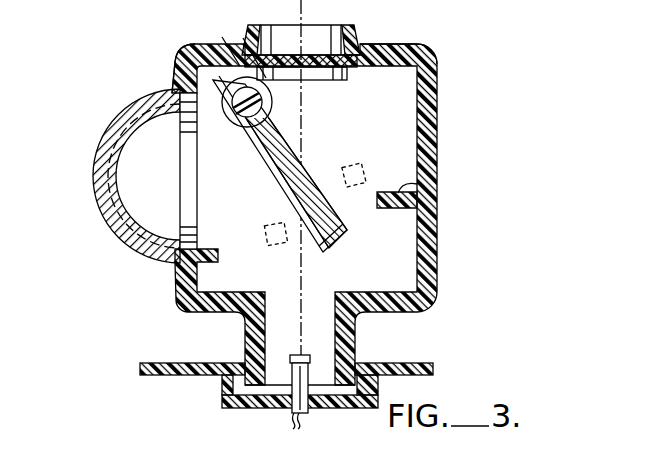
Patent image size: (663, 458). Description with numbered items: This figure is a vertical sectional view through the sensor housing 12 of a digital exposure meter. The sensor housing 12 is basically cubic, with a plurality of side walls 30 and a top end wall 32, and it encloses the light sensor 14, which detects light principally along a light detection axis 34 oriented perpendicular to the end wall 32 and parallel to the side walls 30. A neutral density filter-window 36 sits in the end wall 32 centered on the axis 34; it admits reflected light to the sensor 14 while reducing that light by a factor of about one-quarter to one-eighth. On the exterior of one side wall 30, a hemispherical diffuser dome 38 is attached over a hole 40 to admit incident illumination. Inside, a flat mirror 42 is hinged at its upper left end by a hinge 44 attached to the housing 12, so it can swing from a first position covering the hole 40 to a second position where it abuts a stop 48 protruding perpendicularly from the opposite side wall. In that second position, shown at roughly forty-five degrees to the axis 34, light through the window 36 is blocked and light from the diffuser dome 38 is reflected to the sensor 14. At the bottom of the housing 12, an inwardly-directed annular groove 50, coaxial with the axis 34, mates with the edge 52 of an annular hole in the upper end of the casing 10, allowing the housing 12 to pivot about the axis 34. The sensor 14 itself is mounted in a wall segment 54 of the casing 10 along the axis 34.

The casing 10 is at (416, 358).
The sensor housing 12 is at (447, 138).
The light sensor 14 is at (307, 413).
The side walls 30 is at (183, 56).
The top end wall 32 is at (402, 44).
The light detection axis 34 is at (303, 3).
The neutral density filter-window 36 is at (345, 32).
The hemispherical diffuser dome 38 is at (93, 177).
The hole 40 is at (192, 173).
The flat mirror 42 is at (277, 153).
The hinge 44 is at (226, 48).
The stop 48 is at (438, 184).
The annular groove 50 is at (333, 333).
The edge 52 is at (362, 372).
The wall segment 54 is at (222, 401).